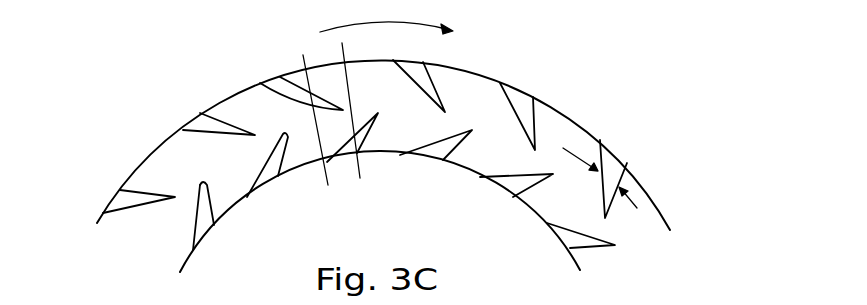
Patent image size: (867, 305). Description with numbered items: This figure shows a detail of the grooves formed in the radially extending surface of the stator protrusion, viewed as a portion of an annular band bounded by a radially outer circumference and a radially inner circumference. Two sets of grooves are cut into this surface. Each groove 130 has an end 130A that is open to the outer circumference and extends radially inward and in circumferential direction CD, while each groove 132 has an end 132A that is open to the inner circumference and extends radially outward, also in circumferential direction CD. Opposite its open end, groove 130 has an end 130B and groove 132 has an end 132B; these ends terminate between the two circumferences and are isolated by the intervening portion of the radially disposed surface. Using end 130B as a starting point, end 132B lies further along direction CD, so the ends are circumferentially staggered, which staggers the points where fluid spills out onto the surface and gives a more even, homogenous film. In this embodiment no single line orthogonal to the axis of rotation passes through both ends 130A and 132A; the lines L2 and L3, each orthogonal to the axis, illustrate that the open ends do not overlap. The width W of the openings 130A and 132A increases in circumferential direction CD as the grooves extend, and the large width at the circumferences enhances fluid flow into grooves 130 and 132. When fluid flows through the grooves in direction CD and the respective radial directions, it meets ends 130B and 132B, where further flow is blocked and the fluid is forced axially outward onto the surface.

The groove 130 is at (374, 132).
The end 130A is at (200, 118).
The end 130B is at (655, 181).
The groove 132 is at (234, 230).
The end 132A is at (202, 244).
The end 132B is at (617, 246).
The circumferential direction CD is at (343, 27).
The width W is at (579, 158).
The line L2 is at (262, 82).
The line L3 is at (348, 83).